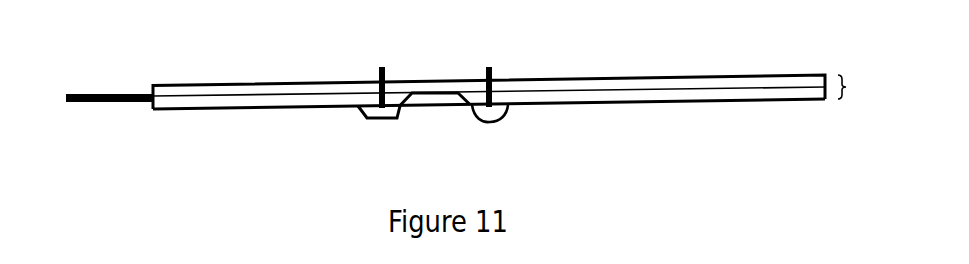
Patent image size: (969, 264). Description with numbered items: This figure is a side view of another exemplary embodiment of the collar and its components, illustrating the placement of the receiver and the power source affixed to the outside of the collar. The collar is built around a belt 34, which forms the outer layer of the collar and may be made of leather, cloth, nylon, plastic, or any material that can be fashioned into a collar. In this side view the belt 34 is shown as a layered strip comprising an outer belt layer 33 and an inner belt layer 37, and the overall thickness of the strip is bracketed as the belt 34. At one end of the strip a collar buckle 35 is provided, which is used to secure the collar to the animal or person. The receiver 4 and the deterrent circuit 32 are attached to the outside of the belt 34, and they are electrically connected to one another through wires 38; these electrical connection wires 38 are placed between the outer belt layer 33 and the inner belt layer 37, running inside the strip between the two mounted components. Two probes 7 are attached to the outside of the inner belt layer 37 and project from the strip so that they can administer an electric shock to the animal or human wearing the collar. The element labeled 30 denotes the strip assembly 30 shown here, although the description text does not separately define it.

The strip 30 is at (652, 78).
The inner belt layer 37 is at (783, 78).
The outer belt layer 33 is at (780, 100).
The belt 34 is at (859, 88).
The collar buckle 35 is at (98, 98).
The probes 7 is at (385, 67).
The receiver 4 is at (380, 121).
The wires 38 is at (457, 106).
The deterrent circuit 32 is at (490, 110).